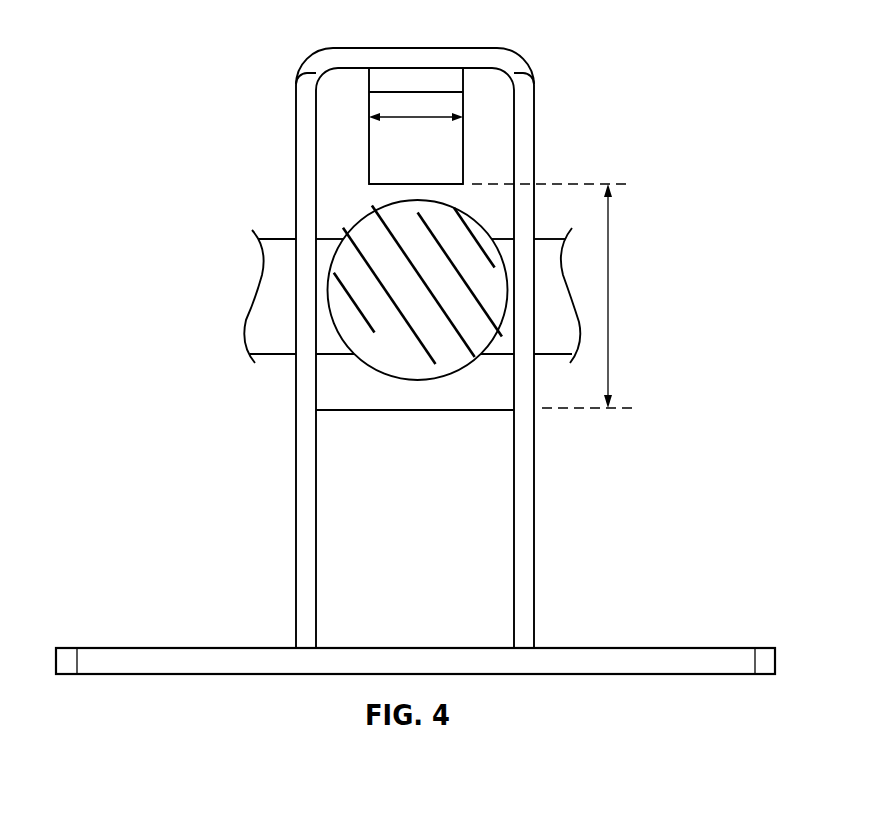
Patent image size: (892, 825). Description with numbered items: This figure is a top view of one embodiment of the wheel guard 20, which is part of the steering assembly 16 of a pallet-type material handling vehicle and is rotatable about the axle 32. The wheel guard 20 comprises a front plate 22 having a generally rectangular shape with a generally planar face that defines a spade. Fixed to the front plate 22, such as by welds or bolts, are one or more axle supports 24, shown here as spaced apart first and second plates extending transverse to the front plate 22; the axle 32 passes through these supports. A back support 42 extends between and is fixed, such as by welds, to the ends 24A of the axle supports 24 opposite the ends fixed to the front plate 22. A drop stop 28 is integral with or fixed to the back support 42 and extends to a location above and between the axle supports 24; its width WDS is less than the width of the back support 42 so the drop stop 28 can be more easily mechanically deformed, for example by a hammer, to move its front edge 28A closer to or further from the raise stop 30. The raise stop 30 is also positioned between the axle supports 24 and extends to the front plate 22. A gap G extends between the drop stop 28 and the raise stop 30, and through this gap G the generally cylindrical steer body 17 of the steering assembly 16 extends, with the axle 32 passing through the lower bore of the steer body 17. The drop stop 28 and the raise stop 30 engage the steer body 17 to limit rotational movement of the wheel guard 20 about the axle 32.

The steering assembly 16 is at (362, 217).
The steer body 17 is at (507, 295).
The wheel guard 20 is at (189, 106).
The front plate 22 is at (593, 675).
The axle supports 24 is at (308, 460).
The ends of the axle supports 24A is at (296, 88).
The drop stop 28 is at (442, 157).
The front edge of the drop stop 28A is at (443, 186).
The raise stop 30 is at (458, 577).
The axle 32 is at (264, 335).
The back support 42 is at (460, 62).
The width of the drop stop WDS is at (420, 116).
The gap G is at (608, 297).